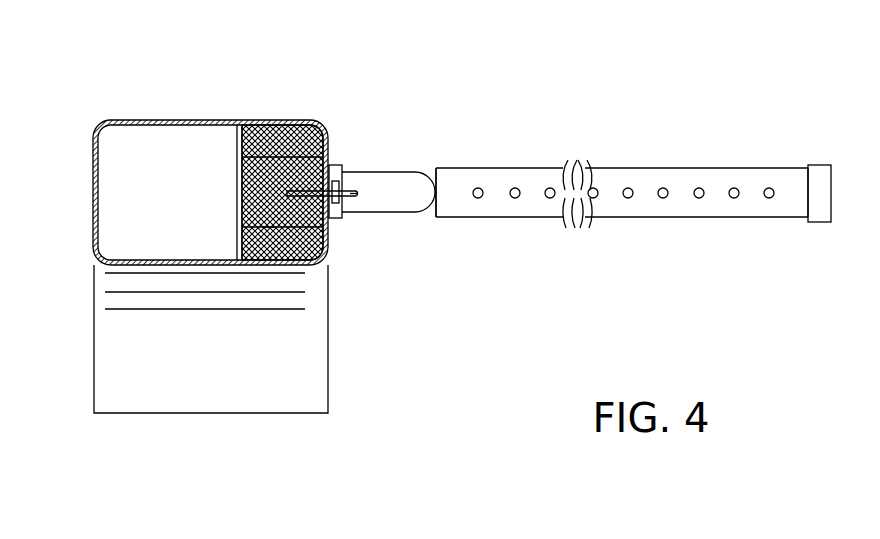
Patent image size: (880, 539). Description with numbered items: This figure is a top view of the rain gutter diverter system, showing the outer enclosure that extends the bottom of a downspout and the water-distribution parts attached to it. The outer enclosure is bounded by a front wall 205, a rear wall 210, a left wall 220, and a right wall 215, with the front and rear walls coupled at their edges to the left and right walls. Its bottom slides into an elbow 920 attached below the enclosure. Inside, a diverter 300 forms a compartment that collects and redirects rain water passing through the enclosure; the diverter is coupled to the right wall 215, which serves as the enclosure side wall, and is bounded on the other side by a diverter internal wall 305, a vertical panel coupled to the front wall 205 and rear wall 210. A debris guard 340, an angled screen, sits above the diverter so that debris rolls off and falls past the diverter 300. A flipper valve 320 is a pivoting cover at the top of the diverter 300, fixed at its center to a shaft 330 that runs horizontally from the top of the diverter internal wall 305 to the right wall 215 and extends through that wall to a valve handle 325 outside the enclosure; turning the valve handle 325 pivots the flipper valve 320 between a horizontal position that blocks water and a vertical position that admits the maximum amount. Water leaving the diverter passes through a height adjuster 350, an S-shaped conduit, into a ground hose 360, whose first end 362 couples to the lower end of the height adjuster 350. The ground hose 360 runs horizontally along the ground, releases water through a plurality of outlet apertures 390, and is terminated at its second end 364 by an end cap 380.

The front wall 205 is at (125, 262).
The rear wall 210 is at (166, 120).
The right wall 215 is at (328, 145).
The left wall 220 is at (92, 185).
The diverter 300 is at (325, 111).
The diverter internal wall 305 is at (242, 240).
The flipper valve 320 is at (268, 227).
The valve handle 325 is at (355, 196).
The shaft 330 is at (298, 196).
The debris guard 340 is at (320, 123).
The height adjuster 350 is at (404, 180).
The ground hose 360 is at (625, 168).
The first end 362 is at (449, 168).
The second end 364 is at (800, 178).
The end cap 380 is at (823, 183).
The plurality of outlet apertures 390 is at (769, 186).
The elbow 920 is at (141, 405).